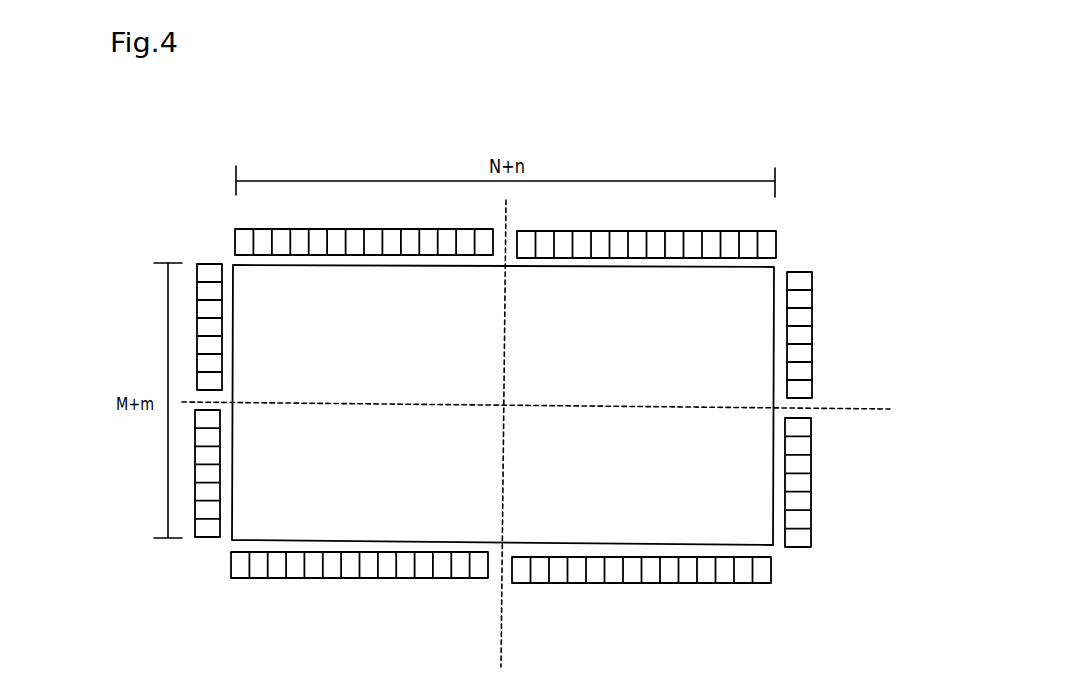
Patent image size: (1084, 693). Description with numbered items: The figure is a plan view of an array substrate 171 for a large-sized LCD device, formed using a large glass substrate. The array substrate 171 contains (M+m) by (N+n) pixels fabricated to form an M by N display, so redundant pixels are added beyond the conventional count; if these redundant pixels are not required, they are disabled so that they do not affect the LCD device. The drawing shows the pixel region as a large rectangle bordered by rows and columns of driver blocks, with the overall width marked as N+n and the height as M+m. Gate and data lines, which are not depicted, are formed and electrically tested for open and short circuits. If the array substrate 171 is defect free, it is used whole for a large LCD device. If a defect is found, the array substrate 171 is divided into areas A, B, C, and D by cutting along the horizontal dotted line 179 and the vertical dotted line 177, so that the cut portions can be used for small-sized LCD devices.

The array substrate 171 is at (808, 222).
The dotted line 177 is at (500, 627).
The dotted line 179 is at (862, 409).